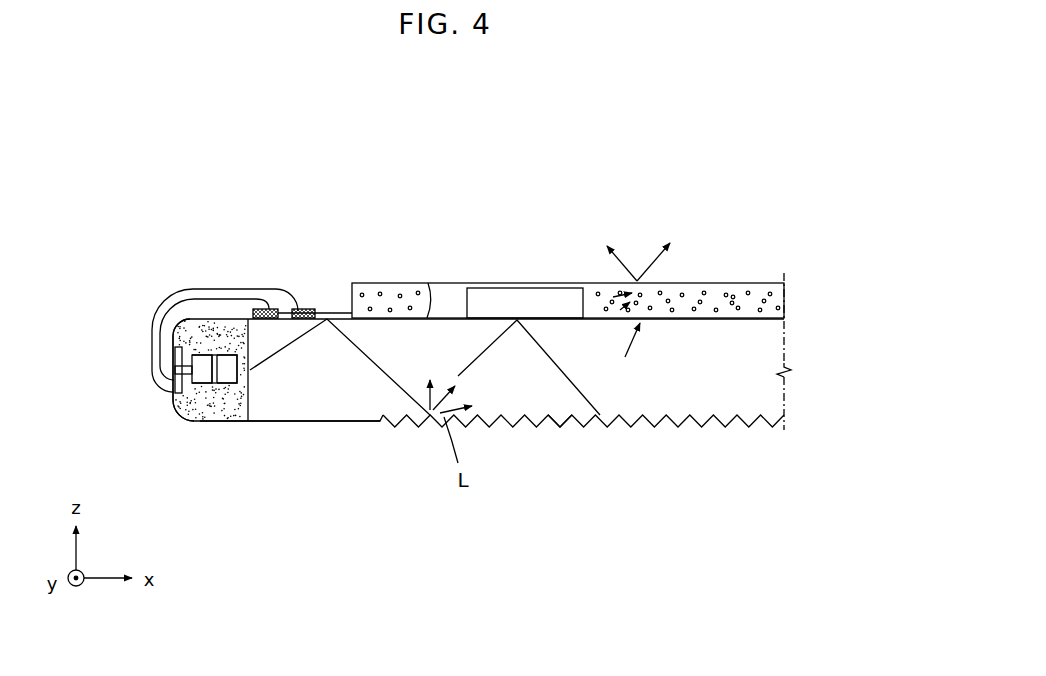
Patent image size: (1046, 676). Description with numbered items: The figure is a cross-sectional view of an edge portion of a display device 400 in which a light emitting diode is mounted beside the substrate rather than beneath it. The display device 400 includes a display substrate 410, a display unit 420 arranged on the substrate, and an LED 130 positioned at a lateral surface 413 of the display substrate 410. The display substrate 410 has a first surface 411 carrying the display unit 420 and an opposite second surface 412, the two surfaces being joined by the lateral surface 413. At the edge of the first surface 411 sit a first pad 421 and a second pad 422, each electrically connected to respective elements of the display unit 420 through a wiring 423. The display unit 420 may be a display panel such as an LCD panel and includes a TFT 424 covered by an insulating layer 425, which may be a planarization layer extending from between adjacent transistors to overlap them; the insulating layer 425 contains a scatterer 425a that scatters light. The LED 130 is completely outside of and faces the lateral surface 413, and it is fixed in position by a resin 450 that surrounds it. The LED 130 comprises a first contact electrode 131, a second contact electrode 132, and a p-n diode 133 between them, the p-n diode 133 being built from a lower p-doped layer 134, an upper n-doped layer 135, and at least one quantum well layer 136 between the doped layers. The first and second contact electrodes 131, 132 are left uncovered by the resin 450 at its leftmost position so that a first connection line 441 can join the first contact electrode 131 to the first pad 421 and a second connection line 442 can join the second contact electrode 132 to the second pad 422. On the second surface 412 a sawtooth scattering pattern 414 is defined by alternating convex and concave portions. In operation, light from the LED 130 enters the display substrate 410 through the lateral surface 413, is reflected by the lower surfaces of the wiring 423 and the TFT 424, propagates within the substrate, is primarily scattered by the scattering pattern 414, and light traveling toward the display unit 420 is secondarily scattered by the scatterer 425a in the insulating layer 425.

The display device 400 is at (745, 170).
The display substrate 410 is at (790, 393).
The first surface 411 is at (429, 283).
The second surface 412 is at (353, 423).
The lateral surface 413 is at (248, 394).
The scattering pattern 414 is at (560, 425).
The display unit 420 is at (790, 307).
The first pad 421 is at (272, 309).
The second pad 422 is at (309, 309).
The wiring 423 is at (340, 313).
The TFT 424 is at (495, 295).
The insulating layer 425 is at (593, 293).
The scatterer 425a is at (733, 297).
The first connection line 441 is at (188, 298).
The second connection line 442 is at (221, 288).
The resin 450 is at (200, 335).
The LED 130 is at (171, 402).
The first contact electrode 131 is at (174, 356).
The second contact electrode 132 is at (174, 386).
The p-n diode 133 is at (260, 490).
The lower p-doped layer 134 is at (202, 383).
The upper n-doped layer 135 is at (228, 383).
The quantum well layer 136 is at (214, 383).